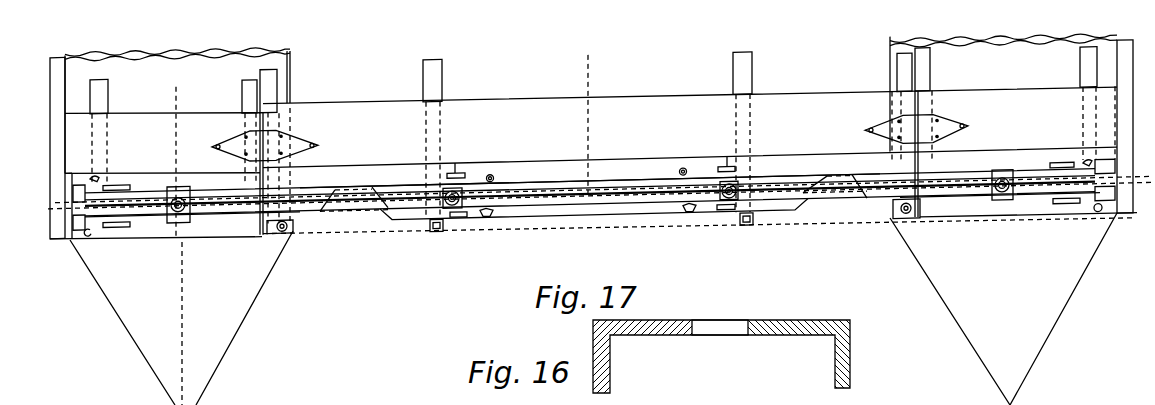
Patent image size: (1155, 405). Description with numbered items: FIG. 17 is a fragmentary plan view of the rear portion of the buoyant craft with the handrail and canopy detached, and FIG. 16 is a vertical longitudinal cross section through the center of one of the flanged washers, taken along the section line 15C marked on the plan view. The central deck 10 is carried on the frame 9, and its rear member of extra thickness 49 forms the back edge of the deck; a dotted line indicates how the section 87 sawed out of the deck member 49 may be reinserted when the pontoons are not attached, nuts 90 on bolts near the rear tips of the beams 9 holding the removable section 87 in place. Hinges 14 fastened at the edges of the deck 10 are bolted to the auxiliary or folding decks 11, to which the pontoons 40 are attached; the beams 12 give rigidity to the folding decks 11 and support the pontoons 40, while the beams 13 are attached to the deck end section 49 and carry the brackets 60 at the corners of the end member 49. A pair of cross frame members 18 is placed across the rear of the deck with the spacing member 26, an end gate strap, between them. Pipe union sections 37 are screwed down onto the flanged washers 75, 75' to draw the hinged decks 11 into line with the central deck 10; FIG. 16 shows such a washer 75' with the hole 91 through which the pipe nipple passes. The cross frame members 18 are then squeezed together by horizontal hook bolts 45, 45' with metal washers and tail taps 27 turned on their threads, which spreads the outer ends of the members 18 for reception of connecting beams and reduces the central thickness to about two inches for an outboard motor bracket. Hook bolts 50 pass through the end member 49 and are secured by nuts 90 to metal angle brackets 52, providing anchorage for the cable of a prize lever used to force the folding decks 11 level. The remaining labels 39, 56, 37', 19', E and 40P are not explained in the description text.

In FIG. 17, the bin side wall 39 is at (61, 68).
In FIG. 17, the pontoon 40 is at (186, 89).
In FIG. 17, the beam 12 is at (118, 102).
In FIG. 17, the beam 13 is at (276, 85).
In FIG. 17, the hinge 14 is at (590, 138).
In FIG. 17, the auxiliary deck 11 is at (182, 154).
In FIG. 17, the frame 9 is at (587, 136).
In FIG. 17, the section line 15C is at (593, 275).
In FIG. 17, the central deck 10 is at (597, 146).
In FIG. 17, the hook bolt 50 is at (463, 181).
In FIG. 17, the metal angle bracket 52 is at (466, 182).
In FIG. 17, the horizontal hook bolt 45 is at (385, 207).
In FIG. 17, the ring 45' is at (1098, 215).
In FIG. 17, the spacing member 26 is at (538, 205).
In FIG. 17, the end member 49 is at (590, 173).
In FIG. 17, the pipe union 37 is at (590, 190).
In FIG. 17, the washer 75 is at (590, 185).
In FIG. 17, the cross frame member 18 is at (372, 196).
In FIG. 17, the tail tap 27 is at (592, 186).
In FIG. 17, the slide plate 56 is at (106, 188).
In FIG. 17, the washer 75' is at (590, 188).
In FIG. 16, the washer 75' is at (717, 356).
In FIG. 17, the end bar 37' is at (594, 198).
In FIG. 17, the axis line 19' is at (590, 181).
In FIG. 17, the center axis E is at (592, 197).
In FIG. 17, the bracket 60 is at (593, 229).
In FIG. 17, the nut 90 is at (435, 242).
In FIG. 17, the removable section 87 is at (699, 232).
In FIG. 17, the hopper 40P is at (187, 300).
In FIG. 16, the hole 91 is at (720, 328).